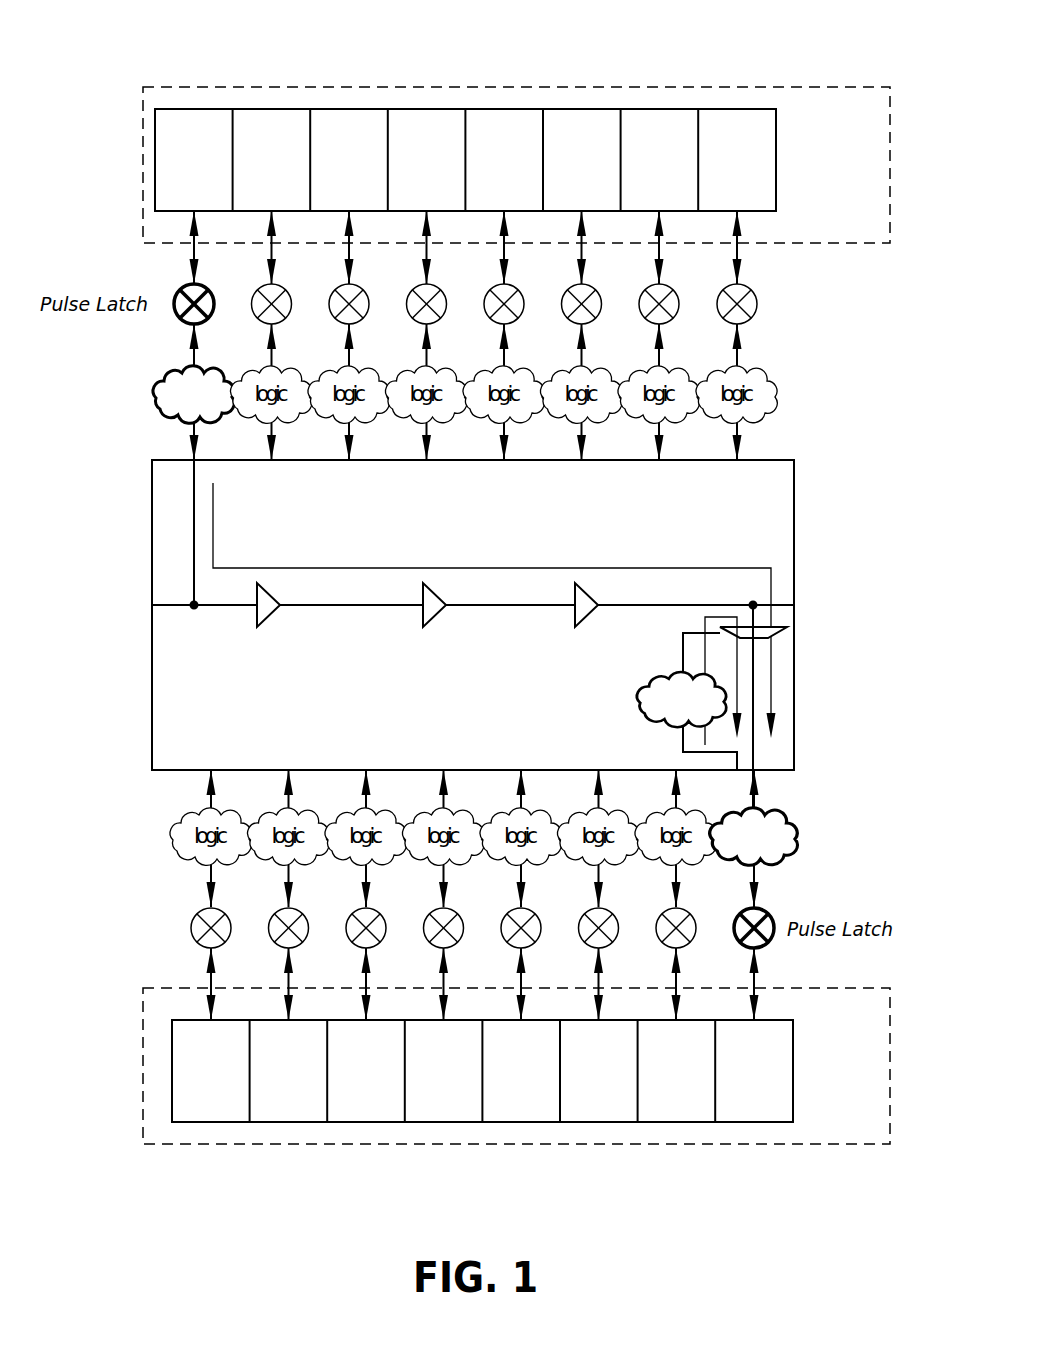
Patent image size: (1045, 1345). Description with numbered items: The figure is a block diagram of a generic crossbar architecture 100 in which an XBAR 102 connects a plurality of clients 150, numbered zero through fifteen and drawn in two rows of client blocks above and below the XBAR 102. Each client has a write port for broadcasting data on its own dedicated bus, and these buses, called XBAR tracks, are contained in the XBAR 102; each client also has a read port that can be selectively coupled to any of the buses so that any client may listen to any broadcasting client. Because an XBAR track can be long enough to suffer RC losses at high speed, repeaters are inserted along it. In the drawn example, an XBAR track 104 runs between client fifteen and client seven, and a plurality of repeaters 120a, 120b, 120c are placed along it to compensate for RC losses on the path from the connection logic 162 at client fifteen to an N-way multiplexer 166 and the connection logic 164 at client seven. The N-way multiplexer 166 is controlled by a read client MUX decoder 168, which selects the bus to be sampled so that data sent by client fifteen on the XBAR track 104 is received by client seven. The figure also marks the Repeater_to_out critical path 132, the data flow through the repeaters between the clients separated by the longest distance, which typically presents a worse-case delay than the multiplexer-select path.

The XBAR architecture 100 is at (843, 60).
The plurality of clients 150 is at (745, 87).
The connection logic 162 is at (147, 400).
The XBAR 102 is at (764, 460).
The XBAR track 104 is at (652, 605).
The Repeater_to_out critical path 132 is at (367, 568).
The repeater 120a is at (270, 618).
The repeater 120b is at (436, 618).
The repeater 120c is at (588, 618).
The N-way multiplexer 166 is at (787, 632).
The read client MUX decoder 168 is at (640, 692).
The connection logic 164 is at (797, 825).